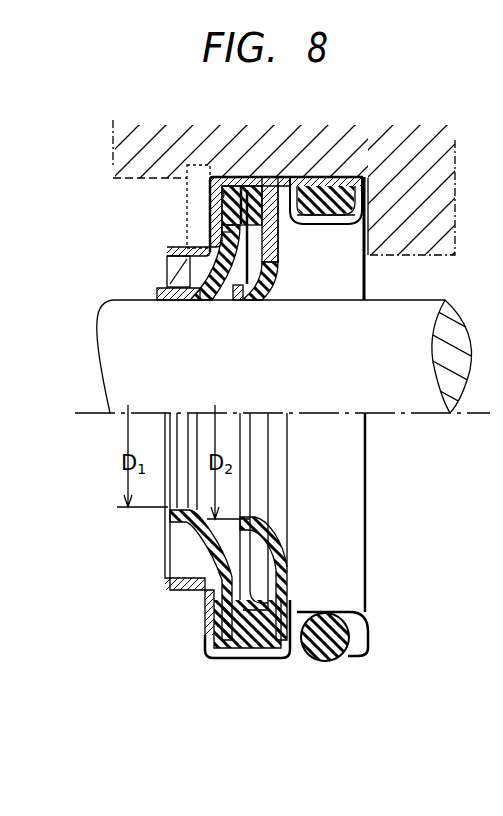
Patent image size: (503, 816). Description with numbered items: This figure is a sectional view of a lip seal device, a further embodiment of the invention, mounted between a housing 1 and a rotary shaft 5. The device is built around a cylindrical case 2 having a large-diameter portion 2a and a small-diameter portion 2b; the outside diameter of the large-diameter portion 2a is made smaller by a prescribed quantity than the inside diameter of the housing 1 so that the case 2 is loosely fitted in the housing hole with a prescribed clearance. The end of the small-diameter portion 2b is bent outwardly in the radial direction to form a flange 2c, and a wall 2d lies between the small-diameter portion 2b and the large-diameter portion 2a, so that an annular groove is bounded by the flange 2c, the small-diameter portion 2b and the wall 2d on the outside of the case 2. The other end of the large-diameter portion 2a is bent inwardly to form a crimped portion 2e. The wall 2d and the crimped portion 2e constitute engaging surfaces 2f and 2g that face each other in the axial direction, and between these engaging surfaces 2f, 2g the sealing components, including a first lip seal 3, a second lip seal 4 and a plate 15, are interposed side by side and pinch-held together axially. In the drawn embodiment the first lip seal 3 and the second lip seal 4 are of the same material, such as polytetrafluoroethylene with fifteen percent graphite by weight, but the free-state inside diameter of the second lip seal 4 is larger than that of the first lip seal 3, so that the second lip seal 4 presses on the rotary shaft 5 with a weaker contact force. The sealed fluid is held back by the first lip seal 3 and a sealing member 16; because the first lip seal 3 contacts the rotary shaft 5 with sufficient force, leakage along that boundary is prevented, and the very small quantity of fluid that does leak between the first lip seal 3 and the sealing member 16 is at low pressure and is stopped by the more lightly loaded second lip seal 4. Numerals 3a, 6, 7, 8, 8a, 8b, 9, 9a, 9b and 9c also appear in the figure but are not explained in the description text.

The housing 1 is at (118, 146).
The cylindrical case 2 is at (281, 162).
The large-diameter portion 2a is at (232, 180).
The small-diameter portion 2b is at (318, 216).
The flange 2c is at (367, 178).
The wall 2d is at (302, 176).
The crimped portion 2e is at (213, 197).
The engaging surface 2f is at (205, 172).
The engaging surface 2g is at (283, 176).
The first lip seal 3 is at (163, 303).
The lip edge 3a is at (186, 302).
The second lip seal 4 is at (249, 303).
The rotary shaft 5 is at (400, 308).
The spring seat 6 is at (330, 213).
The garter spring 7 is at (339, 180).
The sleeve 8 is at (183, 263).
The rubber portion of sleeve 8a is at (218, 213).
The flange of sleeve 8b is at (170, 251).
The elastic lip member 9 is at (283, 274).
The lip portion 9a is at (269, 303).
The bonded portion 9b is at (263, 178).
The lip portion 9c is at (223, 303).
The plate 15 is at (218, 236).
The sealing member 16 is at (242, 176).